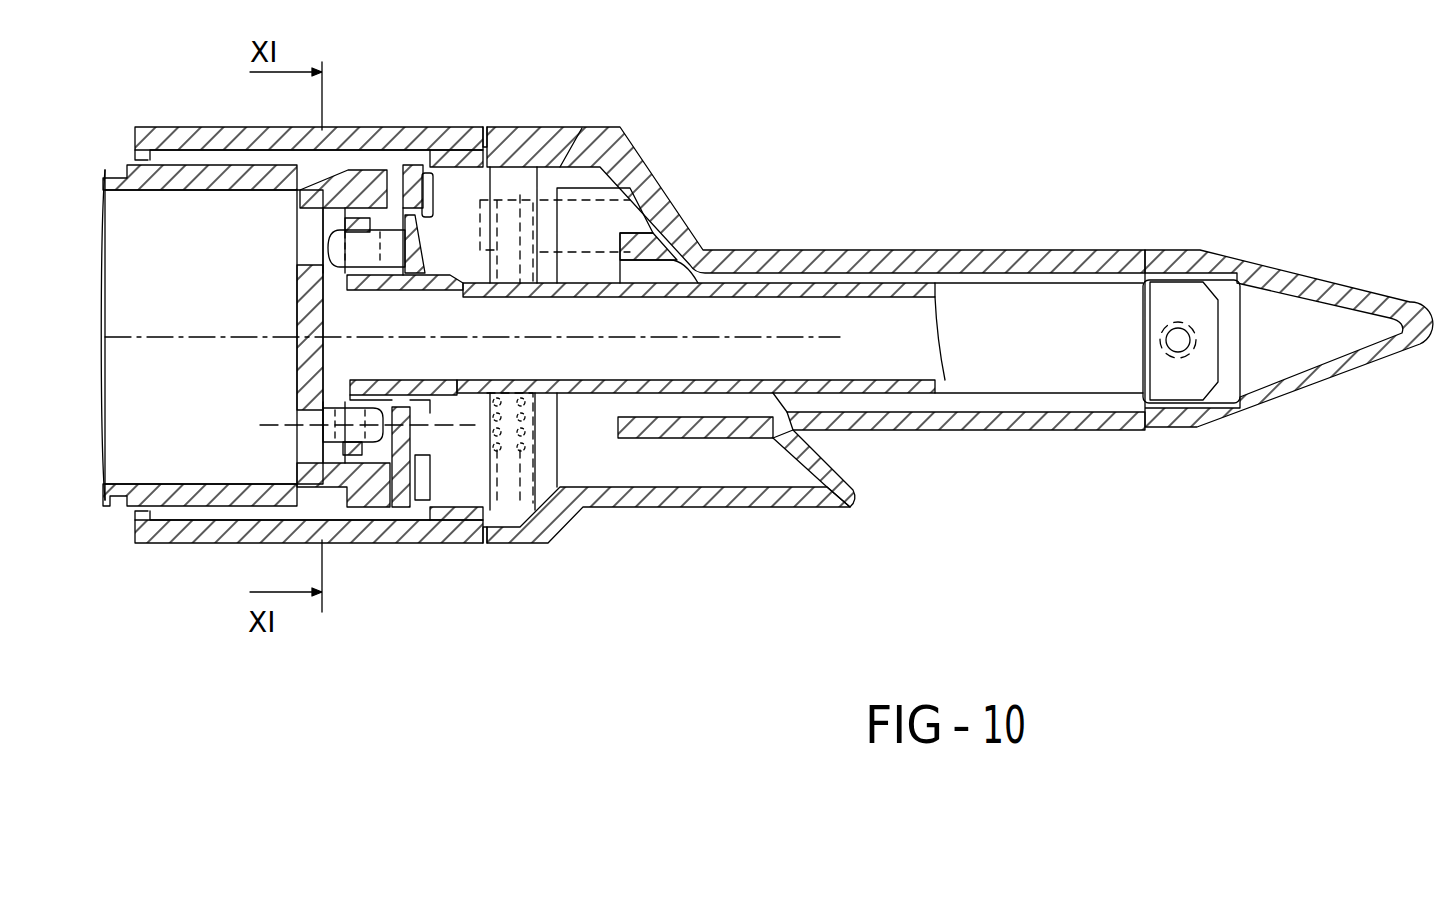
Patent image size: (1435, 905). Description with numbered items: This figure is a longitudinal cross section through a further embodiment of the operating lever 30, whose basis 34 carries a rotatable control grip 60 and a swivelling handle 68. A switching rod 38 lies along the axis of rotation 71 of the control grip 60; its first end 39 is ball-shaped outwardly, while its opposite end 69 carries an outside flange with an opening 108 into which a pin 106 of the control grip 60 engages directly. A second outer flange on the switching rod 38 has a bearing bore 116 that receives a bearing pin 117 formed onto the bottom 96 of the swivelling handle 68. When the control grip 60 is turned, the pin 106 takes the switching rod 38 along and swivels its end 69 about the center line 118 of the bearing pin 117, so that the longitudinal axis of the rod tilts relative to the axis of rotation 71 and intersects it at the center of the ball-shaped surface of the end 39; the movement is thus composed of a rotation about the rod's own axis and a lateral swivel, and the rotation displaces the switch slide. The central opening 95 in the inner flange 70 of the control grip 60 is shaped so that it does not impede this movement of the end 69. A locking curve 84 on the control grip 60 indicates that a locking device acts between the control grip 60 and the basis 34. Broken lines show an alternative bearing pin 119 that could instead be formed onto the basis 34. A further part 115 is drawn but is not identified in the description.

The operating lever 30 is at (818, 221).
The basis 34 is at (1120, 258).
The switching rod 38 is at (880, 290).
The end of the switching rod 39 is at (1183, 393).
The control grip 60 is at (206, 542).
The swivelling handle 68 is at (105, 500).
The end of the switching rod 69 is at (394, 378).
The inner flange 70 is at (432, 243).
The axis of rotation 71 is at (130, 334).
The locking curve 84 is at (430, 172).
The central opening 95 is at (420, 380).
The bottom of the swivelling handle 96 is at (297, 295).
The pin 106 is at (392, 215).
The opening 108 is at (370, 247).
The retaining ring 115 is at (360, 455).
The bearing bore 116 is at (318, 414).
The bearing pin 117 is at (300, 442).
The center line 118 is at (425, 428).
The pin 119 is at (582, 128).